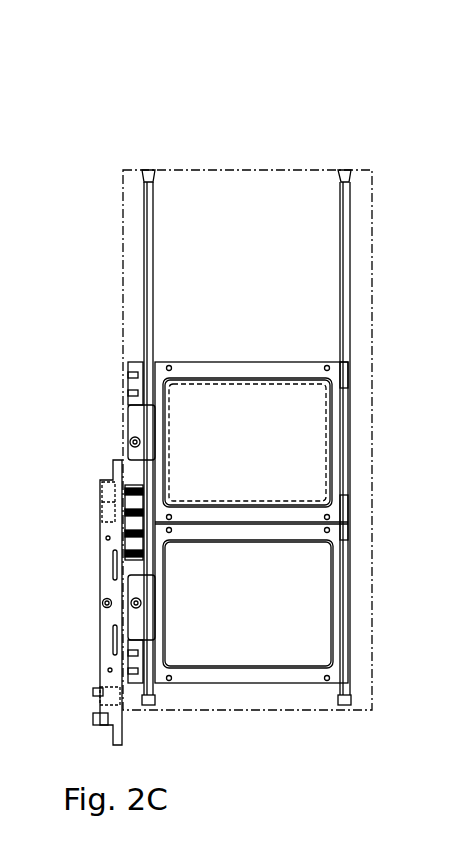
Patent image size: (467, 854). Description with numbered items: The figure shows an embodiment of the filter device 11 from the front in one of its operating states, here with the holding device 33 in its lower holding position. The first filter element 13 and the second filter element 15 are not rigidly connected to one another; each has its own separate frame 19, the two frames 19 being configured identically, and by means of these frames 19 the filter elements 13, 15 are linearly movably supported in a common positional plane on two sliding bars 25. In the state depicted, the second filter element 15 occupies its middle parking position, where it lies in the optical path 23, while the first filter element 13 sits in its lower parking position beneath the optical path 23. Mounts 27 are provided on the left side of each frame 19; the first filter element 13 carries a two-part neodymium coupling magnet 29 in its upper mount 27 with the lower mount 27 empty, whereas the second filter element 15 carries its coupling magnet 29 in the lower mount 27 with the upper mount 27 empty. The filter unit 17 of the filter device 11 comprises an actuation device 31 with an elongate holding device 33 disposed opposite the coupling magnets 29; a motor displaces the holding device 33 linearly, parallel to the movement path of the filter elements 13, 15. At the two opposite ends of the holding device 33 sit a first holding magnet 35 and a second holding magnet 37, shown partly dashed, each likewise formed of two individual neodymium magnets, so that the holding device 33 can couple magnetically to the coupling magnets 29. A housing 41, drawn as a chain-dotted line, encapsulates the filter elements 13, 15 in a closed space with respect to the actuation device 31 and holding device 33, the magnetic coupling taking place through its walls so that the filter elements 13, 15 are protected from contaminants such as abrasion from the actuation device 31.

The filter device 11 is at (131, 124).
The filter unit 17 is at (254, 124).
The actuation device 31 is at (104, 292).
The housing 41 is at (375, 262).
The sliding bars 25 is at (340, 192).
The optical path 23 is at (211, 388).
The frame 19 is at (283, 374).
The second filter element 15 is at (262, 463).
The first filter element 13 is at (262, 620).
The mount 27 is at (128, 388).
The coupling magnet 29 is at (140, 513).
The second holding magnet 37 is at (110, 513).
The holding device 33 is at (98, 546).
The first holding magnet 35 is at (115, 695).